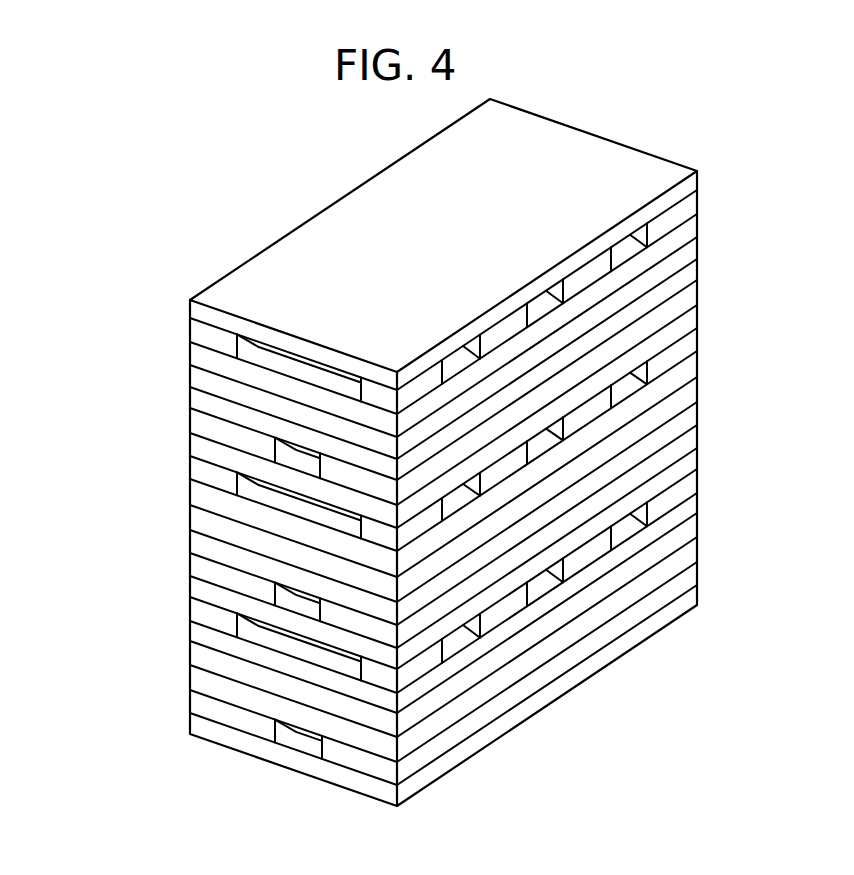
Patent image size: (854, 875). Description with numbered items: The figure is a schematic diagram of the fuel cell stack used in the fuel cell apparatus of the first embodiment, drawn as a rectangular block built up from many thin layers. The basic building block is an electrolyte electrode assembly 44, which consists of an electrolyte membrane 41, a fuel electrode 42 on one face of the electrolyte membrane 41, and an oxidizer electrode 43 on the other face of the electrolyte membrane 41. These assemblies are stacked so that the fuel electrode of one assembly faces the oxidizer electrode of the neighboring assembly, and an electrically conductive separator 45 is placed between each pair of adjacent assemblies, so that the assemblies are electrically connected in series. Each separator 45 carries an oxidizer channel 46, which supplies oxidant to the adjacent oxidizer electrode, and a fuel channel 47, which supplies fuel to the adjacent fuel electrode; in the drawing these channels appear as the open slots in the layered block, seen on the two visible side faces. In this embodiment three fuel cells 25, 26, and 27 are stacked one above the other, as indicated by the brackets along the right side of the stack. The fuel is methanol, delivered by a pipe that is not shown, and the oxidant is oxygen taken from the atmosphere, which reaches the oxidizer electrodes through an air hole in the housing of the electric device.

The fuel cell 25 is at (702, 190).
The fuel cell 26 is at (702, 329).
The fuel cell 27 is at (702, 469).
The electrolyte membrane 41 is at (206, 656).
The fuel electrode 42 is at (86, 585).
The oxidizer electrode 43 is at (200, 632).
The electrolyte electrode assembly 44 is at (364, 637).
The separator 45 is at (405, 392).
The oxidizer channel 46 is at (280, 499).
The fuel channel 47 is at (302, 463).